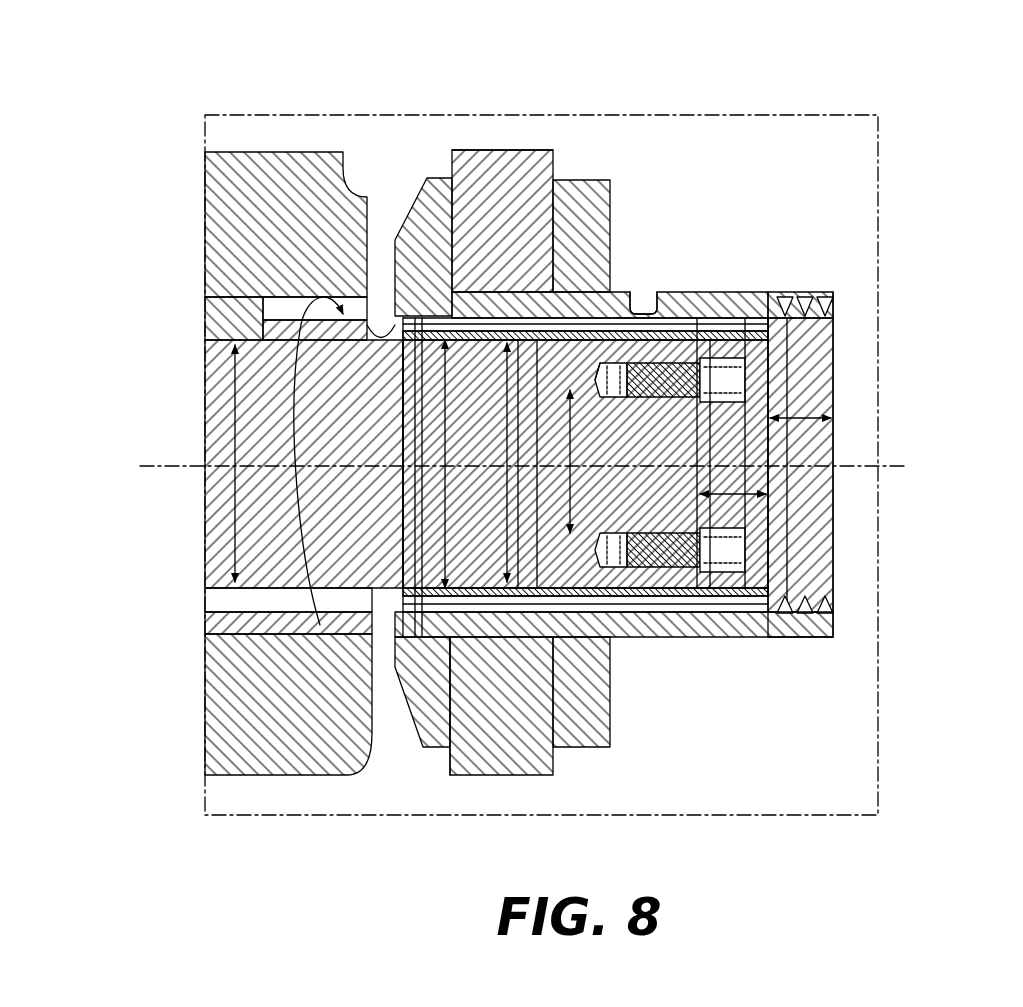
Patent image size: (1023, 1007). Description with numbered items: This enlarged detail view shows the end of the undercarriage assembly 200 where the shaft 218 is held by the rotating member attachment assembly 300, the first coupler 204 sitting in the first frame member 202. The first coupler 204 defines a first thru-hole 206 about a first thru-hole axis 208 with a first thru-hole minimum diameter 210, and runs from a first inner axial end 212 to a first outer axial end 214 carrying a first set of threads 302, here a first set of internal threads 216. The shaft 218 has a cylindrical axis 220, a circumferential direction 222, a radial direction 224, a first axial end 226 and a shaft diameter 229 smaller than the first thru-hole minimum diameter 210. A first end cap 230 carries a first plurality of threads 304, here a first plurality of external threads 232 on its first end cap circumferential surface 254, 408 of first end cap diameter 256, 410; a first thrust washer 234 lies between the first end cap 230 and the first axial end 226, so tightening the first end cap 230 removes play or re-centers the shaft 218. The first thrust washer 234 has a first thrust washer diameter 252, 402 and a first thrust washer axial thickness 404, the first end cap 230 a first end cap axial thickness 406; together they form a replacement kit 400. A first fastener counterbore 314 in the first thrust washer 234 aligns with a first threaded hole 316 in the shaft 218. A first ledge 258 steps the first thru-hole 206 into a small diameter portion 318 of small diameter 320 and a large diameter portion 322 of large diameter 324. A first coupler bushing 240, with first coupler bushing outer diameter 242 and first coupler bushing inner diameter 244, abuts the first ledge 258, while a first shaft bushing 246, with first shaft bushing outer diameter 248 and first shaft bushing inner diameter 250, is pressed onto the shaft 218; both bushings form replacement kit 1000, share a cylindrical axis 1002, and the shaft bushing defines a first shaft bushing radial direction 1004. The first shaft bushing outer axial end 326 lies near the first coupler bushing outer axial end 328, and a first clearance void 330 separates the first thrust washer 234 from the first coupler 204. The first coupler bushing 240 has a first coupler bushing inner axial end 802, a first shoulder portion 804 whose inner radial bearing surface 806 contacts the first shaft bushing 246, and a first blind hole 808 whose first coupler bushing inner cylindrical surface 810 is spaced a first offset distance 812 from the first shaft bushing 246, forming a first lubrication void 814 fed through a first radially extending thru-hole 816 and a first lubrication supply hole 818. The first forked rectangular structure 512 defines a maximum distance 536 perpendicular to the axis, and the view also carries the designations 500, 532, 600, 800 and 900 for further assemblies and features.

The undercarriage assembly 200 is at (507, 97).
The first frame member 202 is at (523, 165).
The first coupler 204 is at (593, 207).
The first thru-hole 206 is at (617, 628).
The first thru-hole axis 208 is at (905, 465).
The first thru-hole minimum diameter 210 is at (408, 400).
The first inner axial end 212 is at (398, 300).
The first outer axial end 214 is at (822, 613).
The first set of internal threads 216 is at (797, 323).
The shaft 218 is at (281, 449).
The cylindrical axis 220 is at (462, 470).
The circumferential direction 222 is at (237, 602).
The radial direction 224 is at (578, 450).
The first axial end 226 is at (703, 518).
The shaft diameter 229 is at (233, 385).
The first end cap 230 is at (822, 367).
The first plurality of external threads 232 is at (800, 600).
The first thrust washer 234 is at (697, 602).
The first coupler bushing 240 is at (598, 315).
The first coupler bushing outer diameter 242 is at (420, 548).
The first coupler bushing inner diameter 244 is at (417, 383).
The first shaft bushing 246 is at (588, 645).
The first shaft bushing outer diameter 248 is at (537, 368).
The first shaft bushing inner diameter 250 is at (507, 443).
The first thrust washer diameter 252 is at (775, 415).
The first end cap circumferential surface 254 is at (793, 313).
The first end cap diameter 256 is at (813, 327).
The first ledge 258 is at (343, 312).
The rotating member attachment assembly 300 is at (633, 100).
The first set of threads 302 is at (830, 628).
The first plurality of threads 304 is at (813, 607).
The first fastener counterbore 314 is at (757, 320).
The first threaded hole 316 is at (660, 397).
The small diameter portion 318 is at (398, 612).
The small diameter 320 is at (403, 532).
The large diameter portion 322 is at (462, 600).
The large diameter 324 is at (448, 367).
The first shaft bushing outer axial end 326 is at (687, 602).
The first coupler bushing outer axial end 328 is at (740, 615).
The first clearance void 330 is at (740, 317).
The replacement kit 400 is at (838, 495).
The first thrust washer diameter 402 is at (712, 448).
The first thrust washer axial thickness 404 is at (700, 478).
The first end cap axial thickness 406 is at (812, 428).
The first end cap circumferential surface 408 is at (800, 306).
The first end cap diameter 410 is at (790, 530).
The seal assembly 500 is at (743, 103).
The first forked rectangular structure 512 is at (612, 174).
The lower seal plate 532 is at (684, 643).
The maximum distance 536 is at (502, 320).
The end cap assembly 600 is at (842, 98).
The mounting assembly 800 is at (895, 127).
The first coupler bushing inner axial end 802 is at (443, 324).
The first shoulder portion 804 is at (405, 322).
The inner radial bearing surface 806 is at (395, 335).
The first blind hole 808 is at (502, 221).
The first coupler bushing inner cylindrical surface 810 is at (545, 318).
The first offset distance 812 is at (585, 318).
The first lubrication void 814 is at (677, 333).
The first radially extending thru-hole 816 is at (603, 386).
The first lubrication supply hole 818 is at (643, 300).
The frame 900 is at (884, 173).
The replacement kit 1000 is at (578, 645).
The first shaft bushing cylindrical axis 1002 is at (372, 640).
The first shaft bushing radial direction 1004 is at (575, 492).